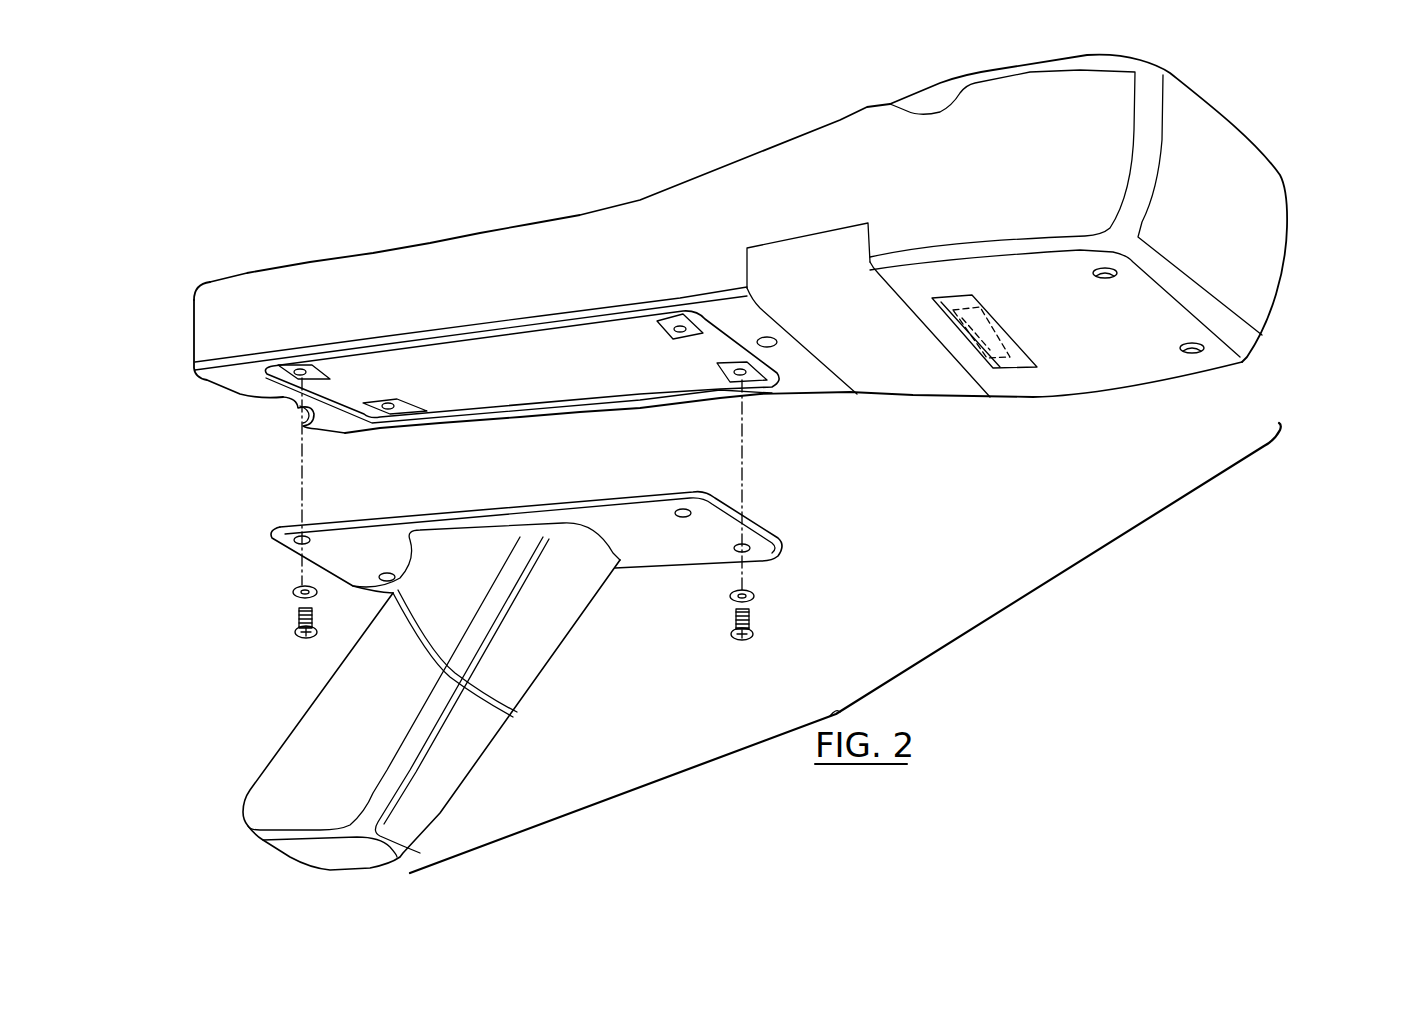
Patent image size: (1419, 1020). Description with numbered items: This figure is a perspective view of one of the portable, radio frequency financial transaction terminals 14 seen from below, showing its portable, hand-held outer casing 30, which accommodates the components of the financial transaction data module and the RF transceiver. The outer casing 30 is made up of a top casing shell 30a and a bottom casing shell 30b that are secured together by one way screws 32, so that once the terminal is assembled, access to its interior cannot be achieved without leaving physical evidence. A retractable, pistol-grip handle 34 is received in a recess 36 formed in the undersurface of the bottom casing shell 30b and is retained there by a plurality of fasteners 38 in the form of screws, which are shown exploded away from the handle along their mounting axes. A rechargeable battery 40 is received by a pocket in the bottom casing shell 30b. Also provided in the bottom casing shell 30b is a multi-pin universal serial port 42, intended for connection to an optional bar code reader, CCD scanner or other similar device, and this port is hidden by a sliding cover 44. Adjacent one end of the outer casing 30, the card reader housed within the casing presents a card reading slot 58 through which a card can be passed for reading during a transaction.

The RF financial transaction terminal 14 is at (1020, 480).
The outer casing 30 is at (1292, 247).
The top casing shell 30a is at (743, 175).
The bottom casing shell 30b is at (1122, 365).
The one way screws 32 is at (1102, 280).
The retractable pistol-grip handle 34 is at (598, 652).
The recess 36 is at (547, 387).
The fasteners 38 is at (297, 635).
The rechargeable battery 40 is at (908, 375).
The multi-pin universal serial port 42 is at (997, 322).
The sliding cover 44 is at (1030, 368).
The card reading slot 58 is at (270, 406).